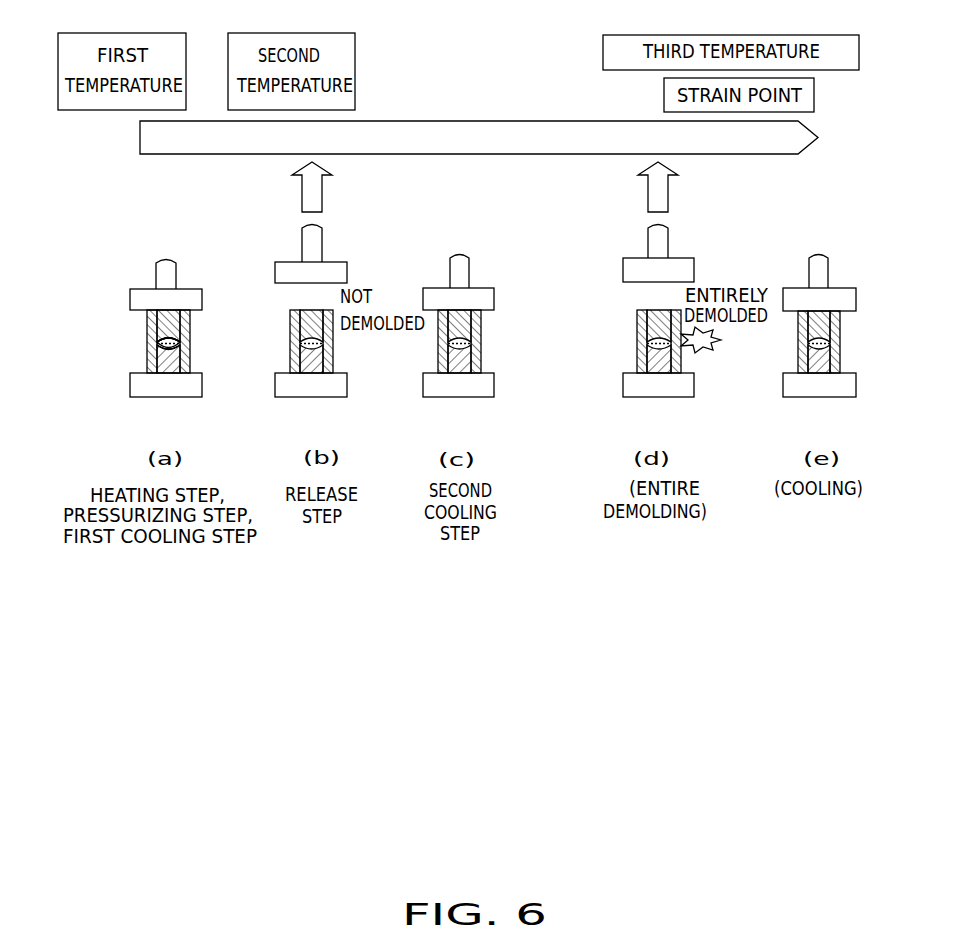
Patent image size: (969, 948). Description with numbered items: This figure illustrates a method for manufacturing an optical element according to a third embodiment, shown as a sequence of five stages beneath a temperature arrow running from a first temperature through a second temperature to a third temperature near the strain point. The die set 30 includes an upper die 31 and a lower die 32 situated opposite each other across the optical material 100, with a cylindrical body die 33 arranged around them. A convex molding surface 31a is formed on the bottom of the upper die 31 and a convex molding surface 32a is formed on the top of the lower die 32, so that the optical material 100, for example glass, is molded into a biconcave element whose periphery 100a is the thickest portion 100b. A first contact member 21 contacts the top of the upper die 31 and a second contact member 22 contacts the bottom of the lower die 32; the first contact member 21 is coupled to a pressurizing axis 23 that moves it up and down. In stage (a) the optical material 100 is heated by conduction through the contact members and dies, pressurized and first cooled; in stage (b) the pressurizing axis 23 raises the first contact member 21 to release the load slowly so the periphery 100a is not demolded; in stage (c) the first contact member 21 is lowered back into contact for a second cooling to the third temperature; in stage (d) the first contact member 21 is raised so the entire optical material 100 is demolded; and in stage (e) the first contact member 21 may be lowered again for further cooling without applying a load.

The first contact member 21 is at (135, 301).
The second contact member 22 is at (132, 387).
The pressurizing axis 23 is at (160, 273).
The die set 30 is at (158, 341).
The upper die 31 is at (148, 316).
The convex molding surface 31a is at (178, 330).
The lower die 32 is at (147, 368).
The convex molding surface 32a is at (164, 349).
The cylindrical body die 33 is at (190, 364).
The optical material 100 is at (152, 343).
The periphery 100a is at (181, 345).
The thickest portion 100b is at (181, 349).